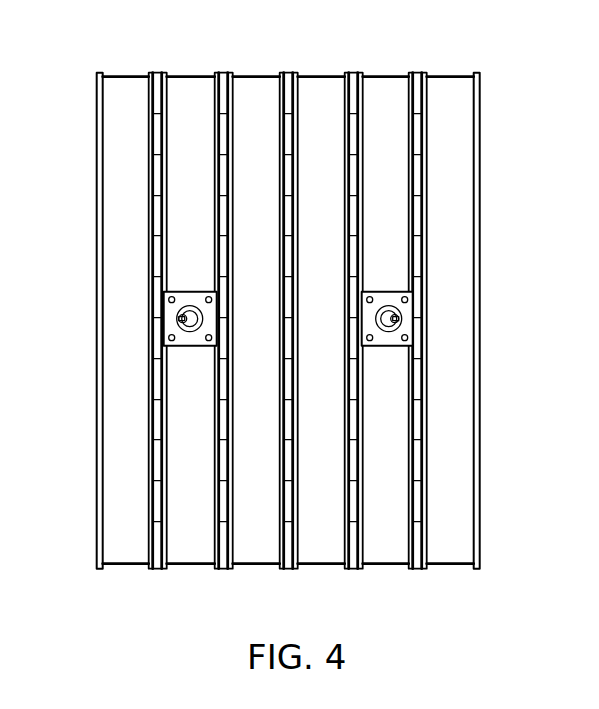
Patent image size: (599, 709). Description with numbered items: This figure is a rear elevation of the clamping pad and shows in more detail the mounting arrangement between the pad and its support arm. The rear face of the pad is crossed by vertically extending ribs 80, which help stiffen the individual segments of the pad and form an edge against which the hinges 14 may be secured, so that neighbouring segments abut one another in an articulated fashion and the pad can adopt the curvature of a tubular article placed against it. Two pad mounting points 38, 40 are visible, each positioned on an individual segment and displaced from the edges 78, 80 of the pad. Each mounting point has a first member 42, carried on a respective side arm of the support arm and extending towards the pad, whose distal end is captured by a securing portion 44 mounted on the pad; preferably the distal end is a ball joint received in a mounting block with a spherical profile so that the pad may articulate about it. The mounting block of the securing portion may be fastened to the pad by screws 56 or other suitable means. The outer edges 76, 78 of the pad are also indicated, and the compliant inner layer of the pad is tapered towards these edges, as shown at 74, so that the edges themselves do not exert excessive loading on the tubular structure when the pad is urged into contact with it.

The hinges 14 is at (160, 72).
The mounting point 38 is at (172, 347).
The mounting point 40 is at (396, 344).
The first member 42 is at (396, 320).
The securing portion 44 is at (184, 320).
The screws 56 is at (372, 345).
The tapered edges of the compliant layer 74 is at (88, 177).
The edge of the pad 76 is at (481, 277).
The edge of the pad 78 is at (97, 105).
The vertically extending ribs 80 is at (97, 438).